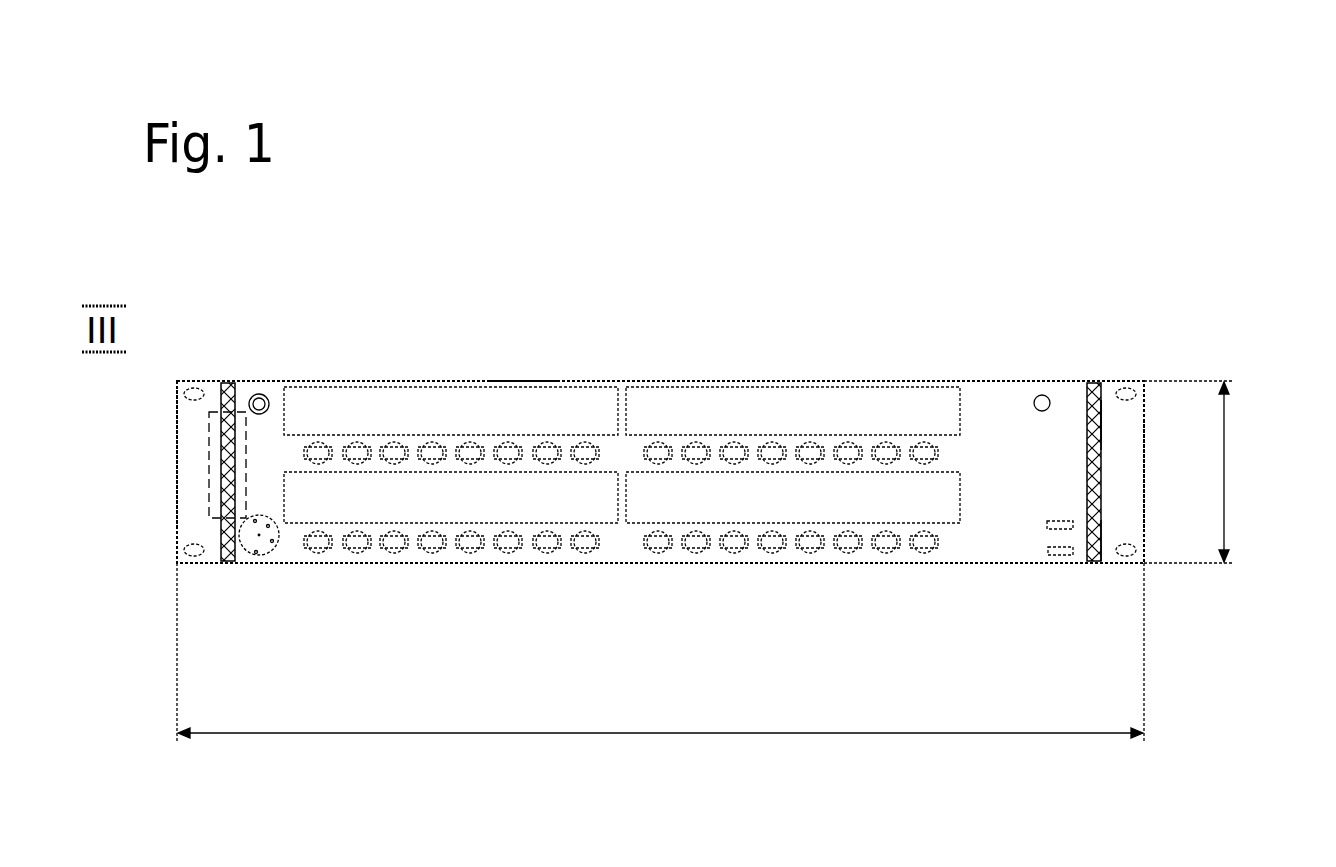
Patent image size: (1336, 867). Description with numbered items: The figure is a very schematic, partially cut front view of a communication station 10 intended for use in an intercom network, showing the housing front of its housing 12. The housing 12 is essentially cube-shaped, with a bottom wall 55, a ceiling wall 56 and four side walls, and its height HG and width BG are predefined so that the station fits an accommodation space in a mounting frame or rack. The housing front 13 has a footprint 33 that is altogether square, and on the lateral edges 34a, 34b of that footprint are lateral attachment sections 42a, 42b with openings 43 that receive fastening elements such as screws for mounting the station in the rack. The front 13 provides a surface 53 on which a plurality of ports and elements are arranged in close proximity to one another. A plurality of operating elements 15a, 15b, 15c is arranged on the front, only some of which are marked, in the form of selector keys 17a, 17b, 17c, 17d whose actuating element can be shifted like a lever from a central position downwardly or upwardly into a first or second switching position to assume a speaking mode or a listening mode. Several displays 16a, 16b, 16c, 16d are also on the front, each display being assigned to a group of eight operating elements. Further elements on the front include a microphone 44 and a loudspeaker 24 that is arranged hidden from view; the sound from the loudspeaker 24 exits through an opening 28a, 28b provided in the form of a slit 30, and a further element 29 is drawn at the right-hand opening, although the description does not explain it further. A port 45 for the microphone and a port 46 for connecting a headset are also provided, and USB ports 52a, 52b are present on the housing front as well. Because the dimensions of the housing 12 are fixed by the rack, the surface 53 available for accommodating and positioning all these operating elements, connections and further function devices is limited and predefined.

The communication station 10 is at (945, 197).
The housing 12 is at (358, 381).
The housing front 13 is at (291, 555).
The operating element 15a is at (357, 554).
The operating element 15b is at (394, 554).
The operating element 15c is at (432, 554).
The display 16a is at (588, 503).
The display 16b is at (742, 505).
The display 16c is at (568, 410).
The display 16d is at (690, 410).
The selector key 17a is at (927, 442).
The selector key 17b is at (884, 442).
The selector key 17c is at (818, 442).
The selector key 17d is at (466, 442).
The loudspeaker 24 is at (240, 383).
The opening 28a is at (225, 575).
The opening 28b is at (1093, 568).
The guide strip edge 29 is at (1100, 428).
The slit 30 is at (1099, 556).
The footprint 33 is at (566, 561).
The lateral edge 34a is at (192, 489).
The lateral edge 34b is at (1108, 505).
The lateral attachment section 42a is at (214, 385).
The lateral attachment section 42b is at (1097, 415).
The opening 43 is at (194, 386).
The microphone 44 is at (1040, 395).
The port for the microphone 45 is at (262, 394).
The port for connecting a headset 46 is at (258, 552).
The USB port 52a is at (1068, 555).
The USB port 52b is at (1047, 527).
The surface 53 is at (307, 576).
The bottom wall 55 is at (680, 563).
The ceiling wall 56 is at (525, 372).
The height of the housing HG is at (1226, 442).
The width of the housing BG is at (635, 736).